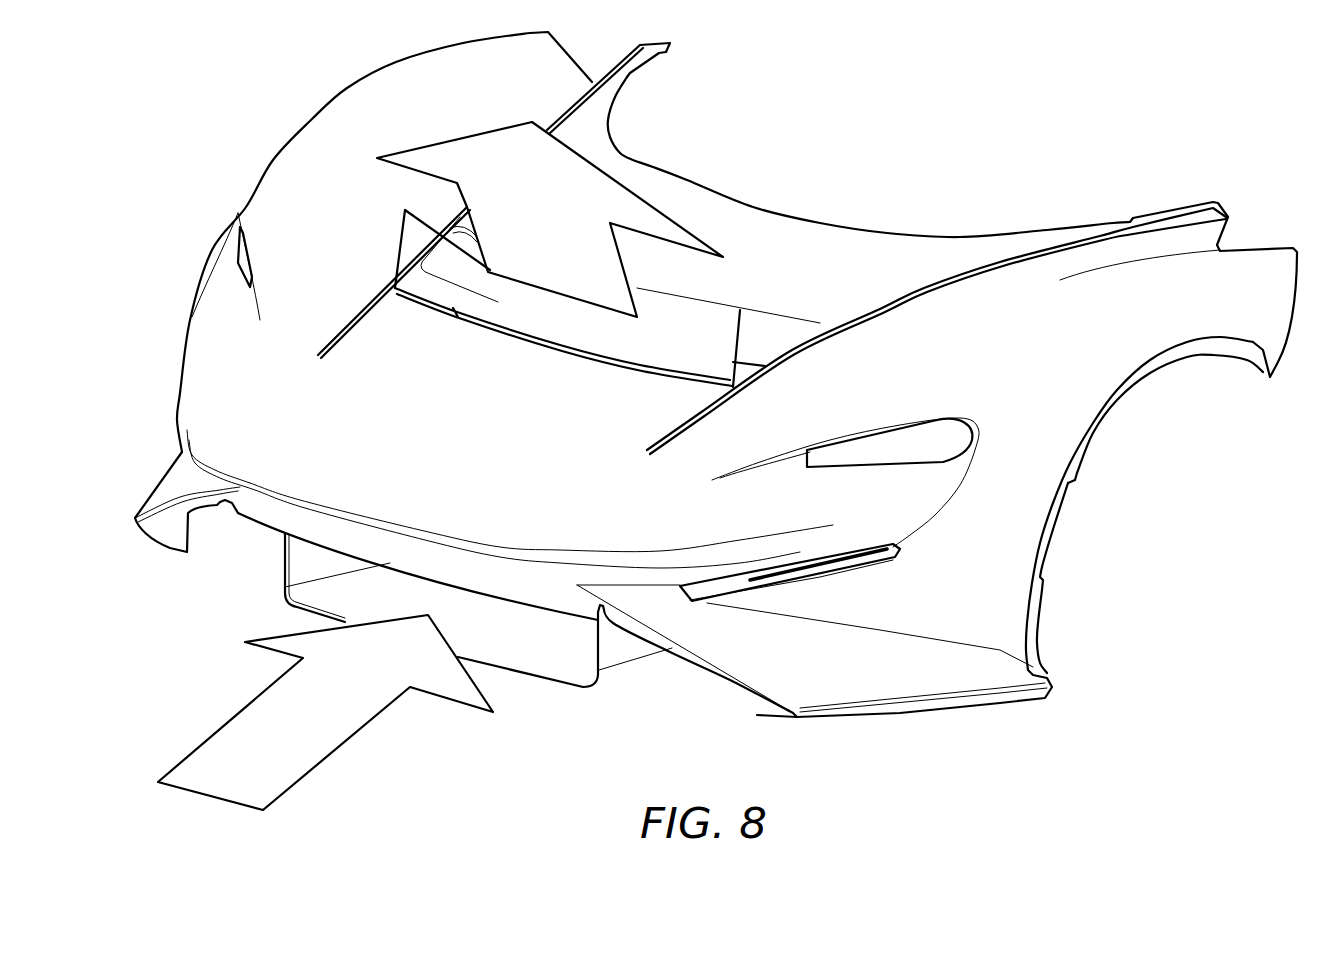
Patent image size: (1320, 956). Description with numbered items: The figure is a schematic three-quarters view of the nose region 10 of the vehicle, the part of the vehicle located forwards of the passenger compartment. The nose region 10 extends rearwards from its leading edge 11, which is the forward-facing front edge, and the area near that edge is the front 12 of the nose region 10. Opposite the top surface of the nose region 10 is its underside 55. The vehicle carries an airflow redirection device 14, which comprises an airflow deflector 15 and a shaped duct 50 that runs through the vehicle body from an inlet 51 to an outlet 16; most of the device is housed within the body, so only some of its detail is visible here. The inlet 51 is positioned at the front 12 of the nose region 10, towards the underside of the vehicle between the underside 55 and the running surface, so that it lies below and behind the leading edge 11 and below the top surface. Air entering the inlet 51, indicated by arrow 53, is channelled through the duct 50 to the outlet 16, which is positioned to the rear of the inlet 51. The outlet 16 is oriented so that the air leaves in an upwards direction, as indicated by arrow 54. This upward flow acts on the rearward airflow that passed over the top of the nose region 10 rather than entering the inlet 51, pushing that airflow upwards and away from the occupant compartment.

The nose region 10 is at (170, 364).
The leading edge 11 is at (248, 492).
The front 12 is at (311, 472).
The airflow redirection device 14 is at (590, 701).
The airflow deflector 15 is at (415, 235).
The outlet 16 is at (780, 330).
The duct 50 is at (633, 648).
The inlet 51 is at (527, 646).
The arrow 53 is at (298, 753).
The arrow 54 is at (573, 180).
The underside 55 is at (262, 543).